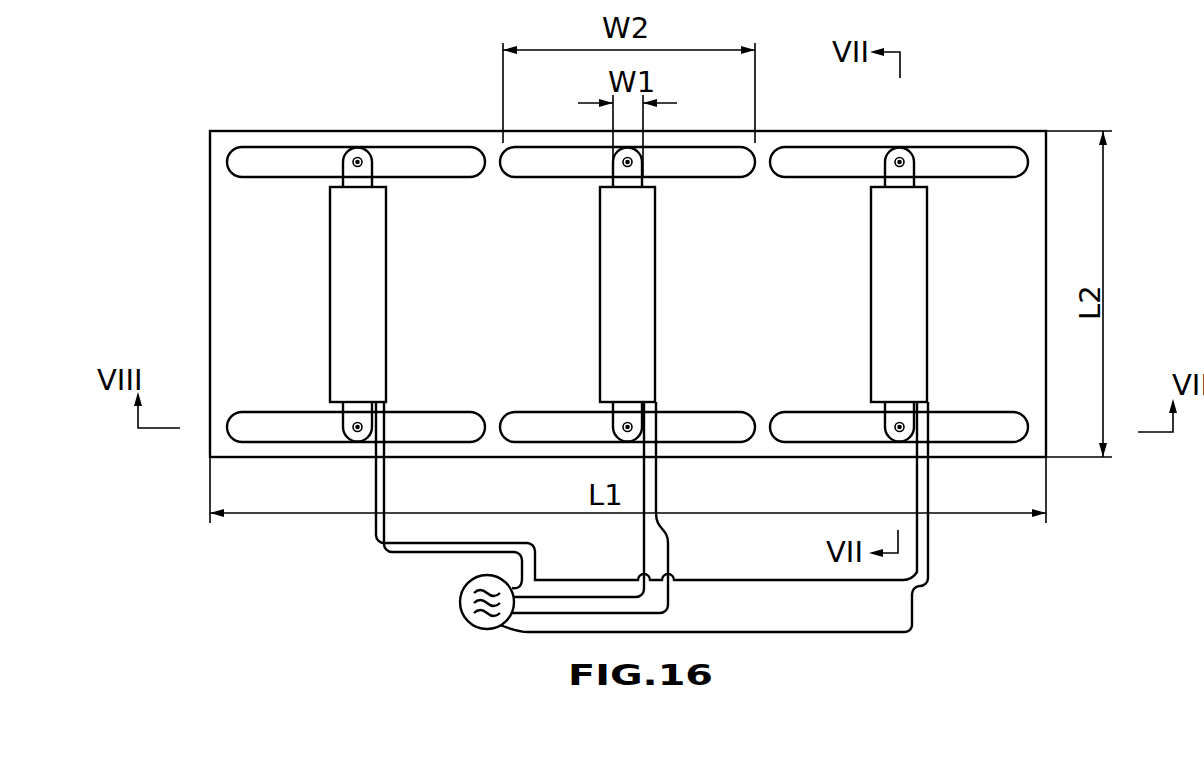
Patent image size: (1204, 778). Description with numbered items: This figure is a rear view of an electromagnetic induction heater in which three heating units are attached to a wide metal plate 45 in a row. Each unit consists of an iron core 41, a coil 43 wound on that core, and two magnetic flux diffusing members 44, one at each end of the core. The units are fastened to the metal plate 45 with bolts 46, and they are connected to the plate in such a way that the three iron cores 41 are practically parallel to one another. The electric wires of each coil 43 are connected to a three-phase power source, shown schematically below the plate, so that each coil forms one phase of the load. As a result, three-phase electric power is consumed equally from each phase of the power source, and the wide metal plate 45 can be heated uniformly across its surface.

The iron core 41 is at (368, 173).
The coil 43 is at (347, 210).
The magnetic flux diffusing member 44 is at (423, 155).
The metal plate 45 is at (252, 325).
The bolt 46 is at (377, 177).